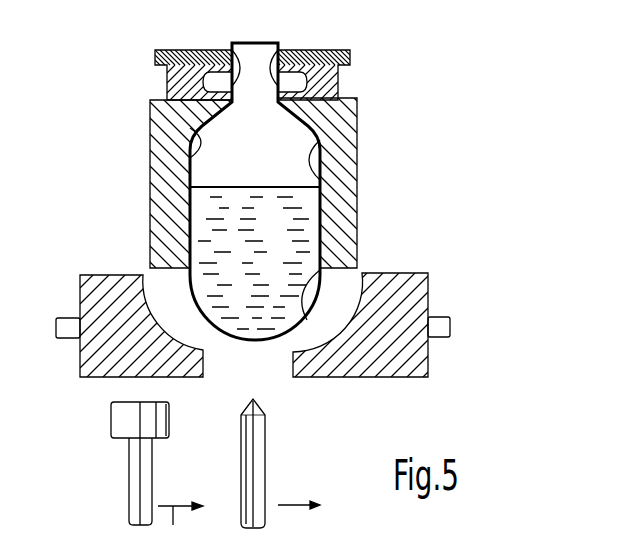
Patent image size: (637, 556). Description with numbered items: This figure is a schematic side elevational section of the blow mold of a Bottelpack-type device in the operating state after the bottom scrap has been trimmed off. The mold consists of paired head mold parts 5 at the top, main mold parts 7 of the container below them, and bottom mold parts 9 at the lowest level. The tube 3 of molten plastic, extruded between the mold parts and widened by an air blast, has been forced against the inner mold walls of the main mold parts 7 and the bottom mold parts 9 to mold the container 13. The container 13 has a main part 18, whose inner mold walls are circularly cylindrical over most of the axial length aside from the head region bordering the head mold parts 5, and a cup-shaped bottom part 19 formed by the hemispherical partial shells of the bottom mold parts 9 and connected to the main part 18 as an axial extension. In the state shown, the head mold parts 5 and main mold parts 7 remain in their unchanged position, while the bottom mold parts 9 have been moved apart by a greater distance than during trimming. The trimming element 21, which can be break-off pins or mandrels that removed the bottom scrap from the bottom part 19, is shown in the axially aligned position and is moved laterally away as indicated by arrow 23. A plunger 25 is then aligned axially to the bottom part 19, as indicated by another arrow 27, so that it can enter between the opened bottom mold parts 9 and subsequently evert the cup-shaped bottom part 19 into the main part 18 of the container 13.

The tube 3 is at (233, 50).
The head mold parts 5 is at (167, 83).
The main mold parts 7 is at (170, 140).
The bottom mold parts 9 is at (122, 283).
The container 13 is at (190, 157).
The main part of the container 18 is at (322, 188).
The cup-shaped bottom part 19 is at (320, 266).
The trimming element 21 is at (253, 450).
The arrow 23 is at (292, 507).
The plunger 25 is at (127, 423).
The arrow 27 is at (180, 525).